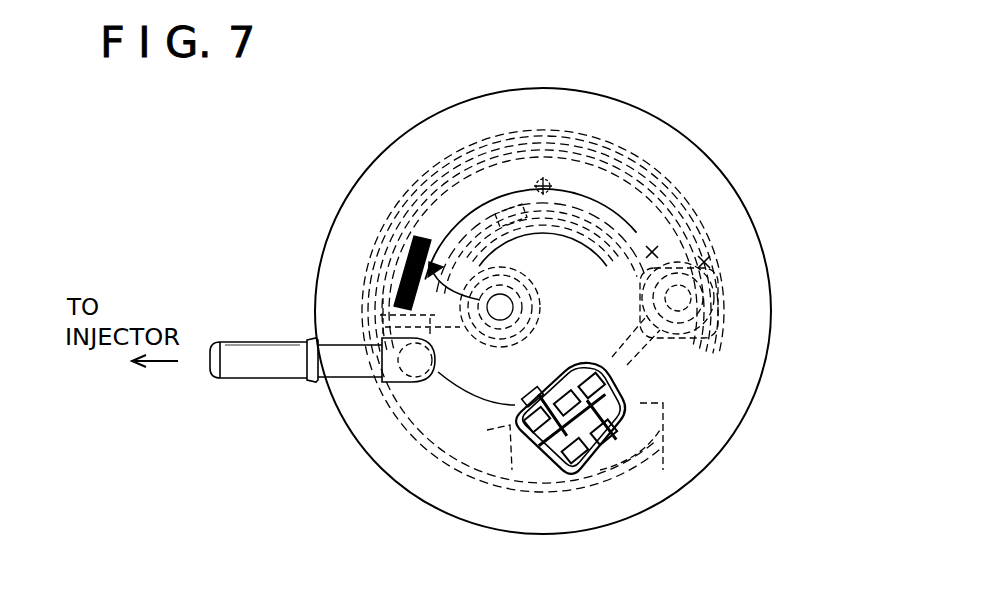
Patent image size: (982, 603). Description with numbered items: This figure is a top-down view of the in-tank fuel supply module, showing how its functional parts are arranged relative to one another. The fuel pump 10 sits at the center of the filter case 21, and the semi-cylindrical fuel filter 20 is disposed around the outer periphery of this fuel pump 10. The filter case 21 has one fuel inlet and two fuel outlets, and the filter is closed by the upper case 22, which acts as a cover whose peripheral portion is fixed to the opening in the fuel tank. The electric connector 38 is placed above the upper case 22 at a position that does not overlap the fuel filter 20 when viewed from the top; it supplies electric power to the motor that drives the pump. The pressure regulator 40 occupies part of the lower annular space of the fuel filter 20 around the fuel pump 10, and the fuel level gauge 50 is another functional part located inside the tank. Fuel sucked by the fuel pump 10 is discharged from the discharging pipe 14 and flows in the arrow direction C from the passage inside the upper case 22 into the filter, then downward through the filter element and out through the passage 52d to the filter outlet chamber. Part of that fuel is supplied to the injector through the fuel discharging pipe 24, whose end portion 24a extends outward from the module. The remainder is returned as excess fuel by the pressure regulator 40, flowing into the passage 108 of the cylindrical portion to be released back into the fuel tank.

The fuel pump 10 is at (604, 364).
The discharging pipe 14 is at (467, 370).
The fuel filter 20 is at (455, 153).
The filter case 21 is at (690, 200).
The upper case 22 is at (672, 140).
The fuel discharging pipe 24 is at (243, 352).
The discharge pipe end 24a is at (284, 372).
The electric connector 38 is at (640, 442).
The pressure regulator 40 is at (700, 352).
The fuel level gauge 50 is at (537, 487).
The passage 52d is at (440, 398).
The passage 108 is at (718, 252).
The arrow direction C is at (388, 290).